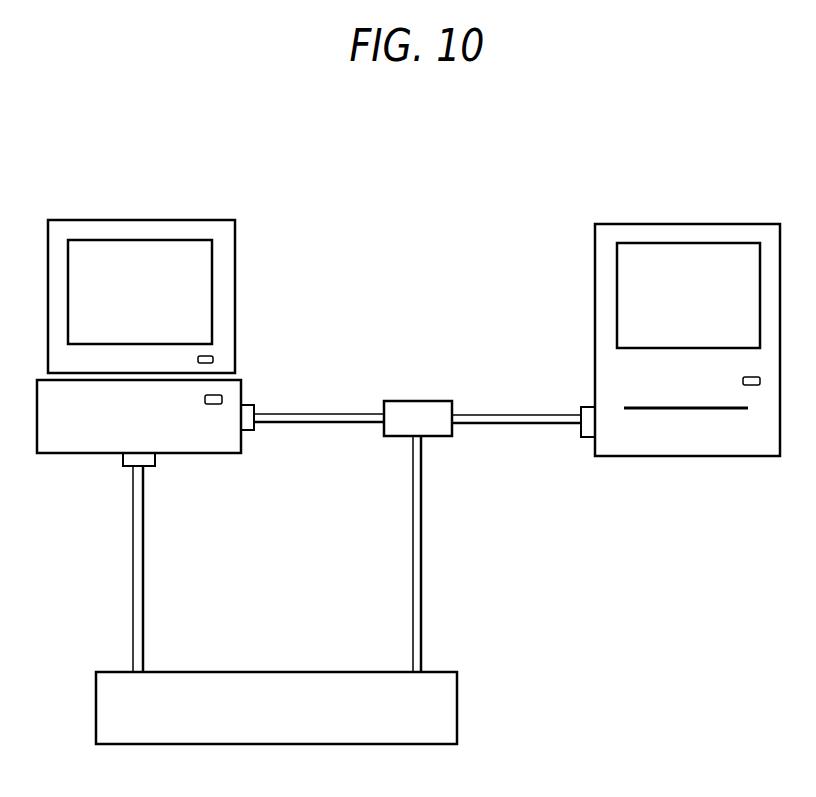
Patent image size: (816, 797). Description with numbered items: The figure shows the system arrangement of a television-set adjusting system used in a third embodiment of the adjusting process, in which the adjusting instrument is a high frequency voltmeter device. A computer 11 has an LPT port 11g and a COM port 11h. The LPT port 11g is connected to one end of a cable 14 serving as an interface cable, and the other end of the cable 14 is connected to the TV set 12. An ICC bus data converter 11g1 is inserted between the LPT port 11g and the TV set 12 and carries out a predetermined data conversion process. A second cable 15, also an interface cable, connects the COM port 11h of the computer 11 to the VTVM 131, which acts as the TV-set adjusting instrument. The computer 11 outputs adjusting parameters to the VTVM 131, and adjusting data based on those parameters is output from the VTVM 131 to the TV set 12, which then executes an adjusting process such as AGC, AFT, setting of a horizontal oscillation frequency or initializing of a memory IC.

The computer 11 is at (143, 209).
The LPT port 11g is at (247, 404).
The COM port 11h is at (123, 459).
The ICC bus data converter 11g1 is at (418, 401).
The TV set 12 is at (688, 210).
The cable 14 is at (318, 413).
The cable 15 is at (133, 568).
The VTVM 131 is at (458, 710).